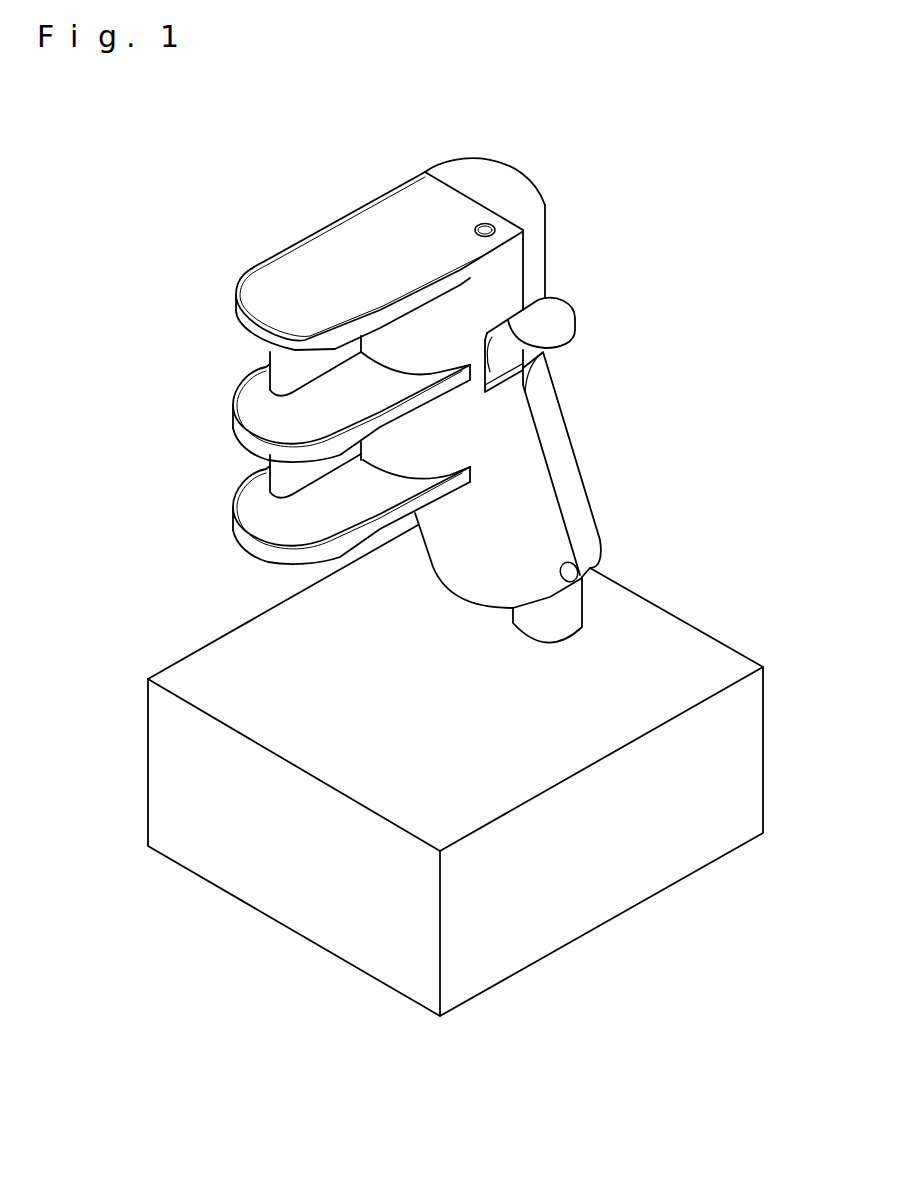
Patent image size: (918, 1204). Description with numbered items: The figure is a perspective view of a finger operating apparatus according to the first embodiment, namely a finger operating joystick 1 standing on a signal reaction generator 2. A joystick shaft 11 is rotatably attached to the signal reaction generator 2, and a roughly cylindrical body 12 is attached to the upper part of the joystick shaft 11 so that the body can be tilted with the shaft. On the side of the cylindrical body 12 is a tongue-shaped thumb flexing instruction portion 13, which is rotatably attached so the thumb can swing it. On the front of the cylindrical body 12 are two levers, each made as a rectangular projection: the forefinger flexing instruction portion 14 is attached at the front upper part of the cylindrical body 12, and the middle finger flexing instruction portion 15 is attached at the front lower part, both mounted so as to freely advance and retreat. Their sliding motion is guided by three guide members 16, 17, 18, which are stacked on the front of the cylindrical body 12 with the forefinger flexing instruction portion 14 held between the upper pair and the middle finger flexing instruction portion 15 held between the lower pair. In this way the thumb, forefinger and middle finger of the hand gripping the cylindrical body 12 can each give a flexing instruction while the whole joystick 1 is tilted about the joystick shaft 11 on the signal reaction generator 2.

The finger operating joystick 1 is at (793, 103).
The signal reaction generator 2 is at (763, 763).
The joystick shaft 11 is at (582, 603).
The cylindrical body 12 is at (538, 252).
The thumb flexing instruction portion 13 is at (548, 298).
The forefinger flexing instruction portion 14 is at (282, 363).
The middle finger flexing instruction portion 15 is at (287, 468).
The guide member 16 is at (349, 237).
The guide member 17 is at (280, 411).
The guide member 18 is at (290, 513).